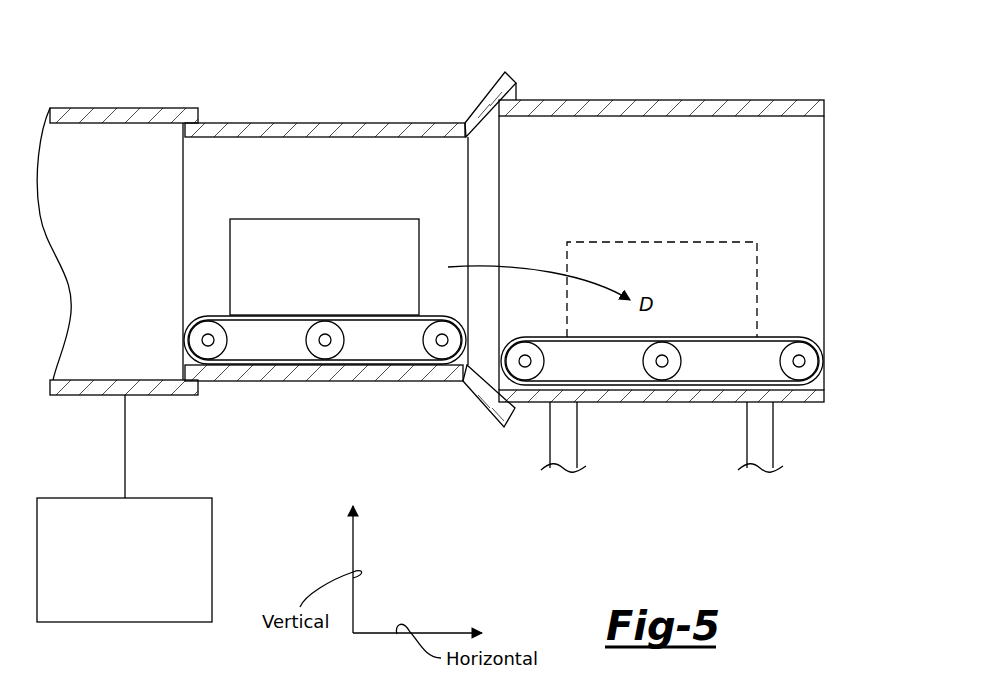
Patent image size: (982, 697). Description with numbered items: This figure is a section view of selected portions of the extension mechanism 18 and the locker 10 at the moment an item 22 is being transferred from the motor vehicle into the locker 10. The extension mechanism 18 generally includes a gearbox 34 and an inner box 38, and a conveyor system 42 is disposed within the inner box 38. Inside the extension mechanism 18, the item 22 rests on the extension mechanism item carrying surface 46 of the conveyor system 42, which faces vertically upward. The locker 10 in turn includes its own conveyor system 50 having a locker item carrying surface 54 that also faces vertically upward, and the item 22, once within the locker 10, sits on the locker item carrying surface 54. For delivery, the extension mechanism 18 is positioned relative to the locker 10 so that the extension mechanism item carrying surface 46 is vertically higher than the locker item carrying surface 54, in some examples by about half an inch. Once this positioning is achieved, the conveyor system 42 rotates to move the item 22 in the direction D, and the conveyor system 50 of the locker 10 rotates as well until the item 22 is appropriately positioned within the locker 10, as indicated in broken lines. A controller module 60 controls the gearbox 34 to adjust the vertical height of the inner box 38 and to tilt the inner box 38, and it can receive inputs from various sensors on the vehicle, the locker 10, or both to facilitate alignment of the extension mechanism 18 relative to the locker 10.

The locker 10 is at (793, 65).
The extension mechanism 18 is at (457, 70).
The item 22 is at (330, 219).
The gearbox 34 is at (110, 108).
The inner box 38 is at (280, 123).
The conveyor system 42 is at (197, 315).
The extension mechanism item carrying surface 46 is at (387, 299).
The conveyor system 50 is at (811, 333).
The locker item carrying surface 54 is at (713, 320).
The controller module 60 is at (212, 518).